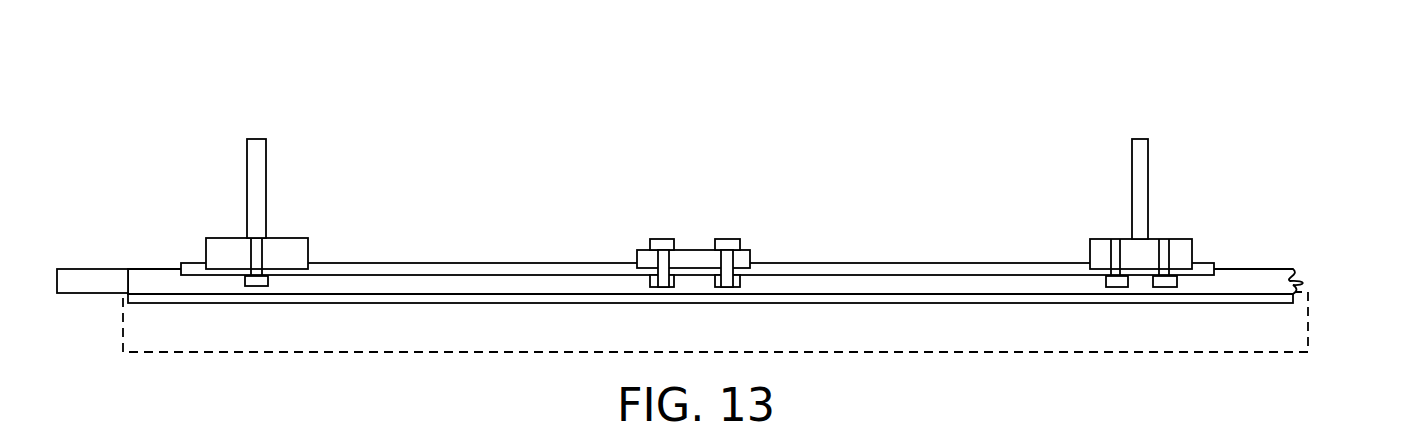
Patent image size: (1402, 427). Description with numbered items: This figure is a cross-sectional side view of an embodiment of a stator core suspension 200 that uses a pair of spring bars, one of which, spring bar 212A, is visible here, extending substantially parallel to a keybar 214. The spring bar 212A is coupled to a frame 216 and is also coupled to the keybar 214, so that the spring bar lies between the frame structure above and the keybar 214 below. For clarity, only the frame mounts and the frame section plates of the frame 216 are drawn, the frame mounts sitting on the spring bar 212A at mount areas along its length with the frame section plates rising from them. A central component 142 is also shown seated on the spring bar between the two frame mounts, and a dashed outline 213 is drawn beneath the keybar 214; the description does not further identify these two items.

The stator core suspension 200 is at (208, 122).
The frame 216 is at (318, 170).
The clamp 142 is at (700, 233).
The spring bar 212A is at (930, 273).
The keybar 214 is at (1265, 283).
The base outline 213 is at (1262, 338).